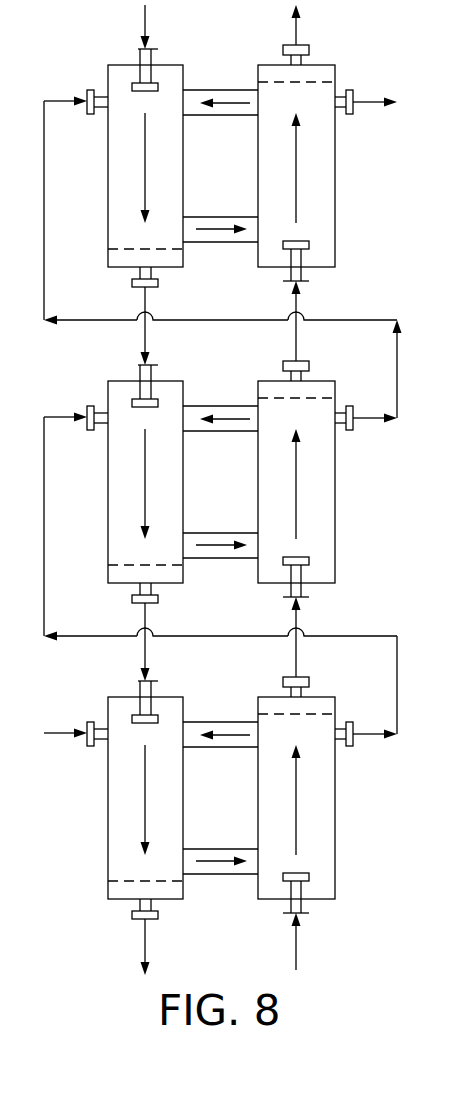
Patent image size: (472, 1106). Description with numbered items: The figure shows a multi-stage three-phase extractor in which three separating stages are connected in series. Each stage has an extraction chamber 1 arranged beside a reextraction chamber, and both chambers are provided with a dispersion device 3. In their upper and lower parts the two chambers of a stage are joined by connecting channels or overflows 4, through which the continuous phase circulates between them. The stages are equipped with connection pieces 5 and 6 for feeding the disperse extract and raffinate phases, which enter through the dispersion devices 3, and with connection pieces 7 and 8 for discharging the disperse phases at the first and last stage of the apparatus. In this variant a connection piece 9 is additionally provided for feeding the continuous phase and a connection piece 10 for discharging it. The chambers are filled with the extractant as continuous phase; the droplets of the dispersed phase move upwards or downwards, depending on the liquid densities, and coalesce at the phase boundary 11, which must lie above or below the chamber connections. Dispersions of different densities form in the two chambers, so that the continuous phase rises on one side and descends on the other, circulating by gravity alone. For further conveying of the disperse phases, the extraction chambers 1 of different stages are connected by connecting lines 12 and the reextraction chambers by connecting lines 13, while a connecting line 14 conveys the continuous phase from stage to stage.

The extraction chamber 1 is at (108, 173).
The dispersion device 3 is at (132, 87).
The connecting channel 4 is at (214, 90).
The connection piece 5 is at (130, 50).
The connection piece 6 is at (288, 283).
The connection piece 7 is at (158, 283).
The connection piece 8 is at (309, 48).
The connection piece 9 is at (86, 92).
The connection piece 10 is at (351, 114).
The phase boundary 11 is at (335, 82).
The connecting line 12 is at (142, 298).
The connecting line 13 is at (303, 327).
The connecting line 14 is at (44, 201).